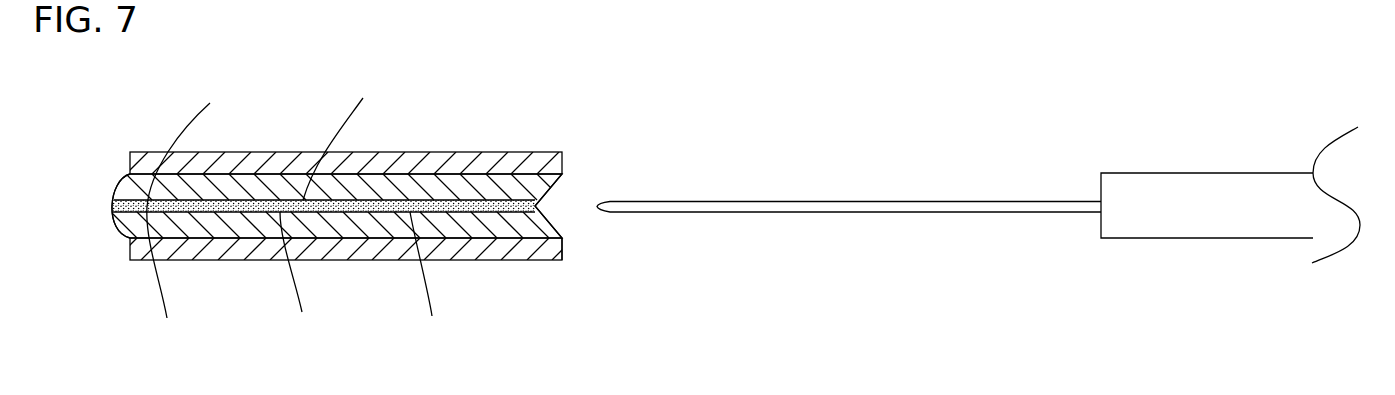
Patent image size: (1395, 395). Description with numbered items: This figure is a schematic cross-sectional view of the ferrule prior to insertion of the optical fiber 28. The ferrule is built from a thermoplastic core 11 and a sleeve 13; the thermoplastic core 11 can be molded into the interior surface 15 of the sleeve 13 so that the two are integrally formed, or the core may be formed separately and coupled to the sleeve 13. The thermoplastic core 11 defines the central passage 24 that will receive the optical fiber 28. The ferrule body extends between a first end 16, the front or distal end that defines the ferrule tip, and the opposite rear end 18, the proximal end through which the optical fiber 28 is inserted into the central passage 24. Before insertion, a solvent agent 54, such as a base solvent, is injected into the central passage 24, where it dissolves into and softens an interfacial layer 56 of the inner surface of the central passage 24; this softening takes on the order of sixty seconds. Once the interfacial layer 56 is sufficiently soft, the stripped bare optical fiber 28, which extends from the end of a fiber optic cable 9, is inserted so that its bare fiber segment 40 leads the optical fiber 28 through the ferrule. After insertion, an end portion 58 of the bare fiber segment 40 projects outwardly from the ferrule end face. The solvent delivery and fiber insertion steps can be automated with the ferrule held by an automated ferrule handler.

The fiber optic cable 9 is at (1198, 208).
The thermoplastic core 11 is at (123, 194).
The sleeve 13 is at (527, 163).
The interior surface 15 is at (246, 184).
The first end 16 is at (347, 222).
The rear end 18 is at (565, 250).
The central passage 24 is at (357, 203).
The optical fiber 28 is at (849, 211).
The bare fiber segment 40 is at (742, 205).
The solvent agent 54 is at (535, 206).
The interfacial layer 56 is at (299, 207).
The end portion 58 is at (633, 226).